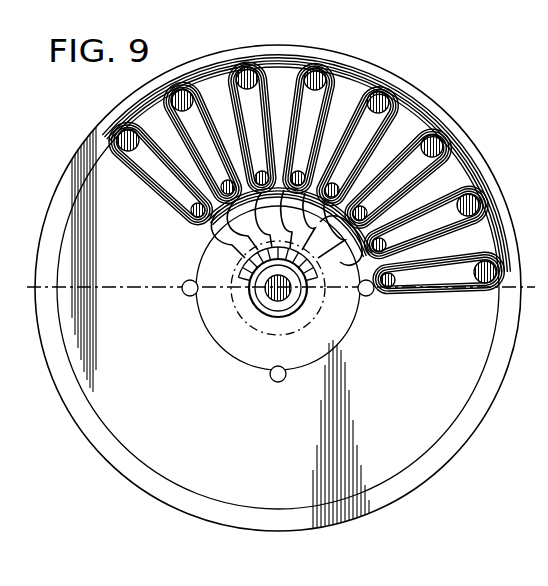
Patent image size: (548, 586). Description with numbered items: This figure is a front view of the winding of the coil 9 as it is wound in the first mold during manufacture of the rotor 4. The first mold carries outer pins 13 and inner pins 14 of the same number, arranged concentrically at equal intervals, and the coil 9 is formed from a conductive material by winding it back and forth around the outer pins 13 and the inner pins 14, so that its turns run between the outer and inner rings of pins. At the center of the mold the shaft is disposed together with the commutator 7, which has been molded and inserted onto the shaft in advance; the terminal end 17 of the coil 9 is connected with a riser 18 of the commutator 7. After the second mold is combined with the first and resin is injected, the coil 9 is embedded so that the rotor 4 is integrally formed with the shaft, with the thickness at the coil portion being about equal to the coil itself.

The rotor 4 is at (137, 445).
The commutator 7 is at (251, 270).
The coil 9 is at (201, 68).
The outer pins 13 is at (248, 62).
The inner pins 14 is at (224, 184).
The terminal end 17 is at (221, 238).
The riser 18 is at (358, 297).